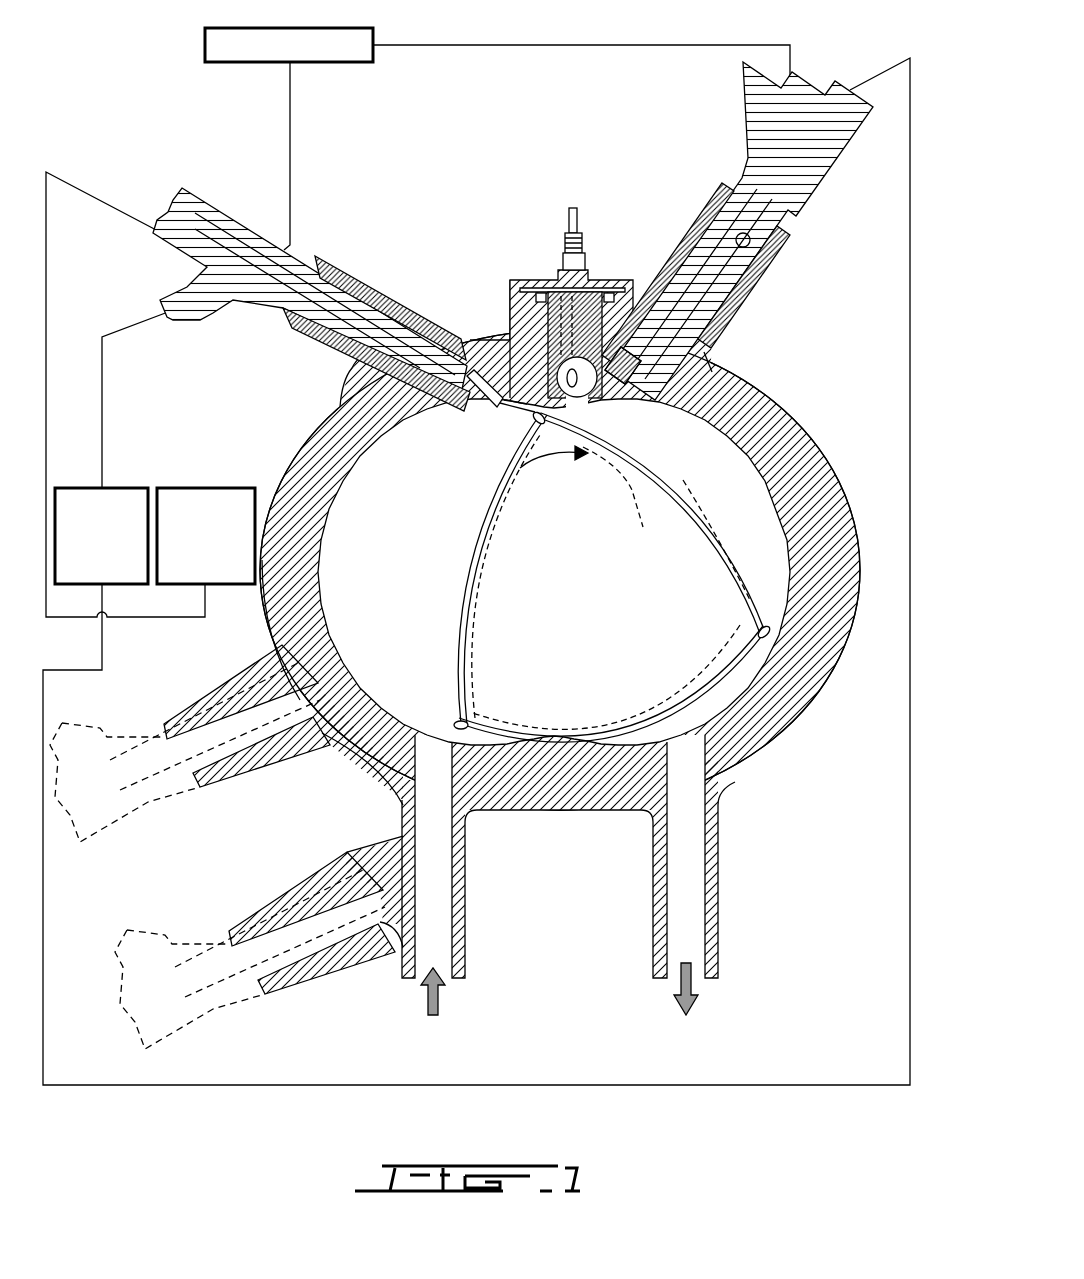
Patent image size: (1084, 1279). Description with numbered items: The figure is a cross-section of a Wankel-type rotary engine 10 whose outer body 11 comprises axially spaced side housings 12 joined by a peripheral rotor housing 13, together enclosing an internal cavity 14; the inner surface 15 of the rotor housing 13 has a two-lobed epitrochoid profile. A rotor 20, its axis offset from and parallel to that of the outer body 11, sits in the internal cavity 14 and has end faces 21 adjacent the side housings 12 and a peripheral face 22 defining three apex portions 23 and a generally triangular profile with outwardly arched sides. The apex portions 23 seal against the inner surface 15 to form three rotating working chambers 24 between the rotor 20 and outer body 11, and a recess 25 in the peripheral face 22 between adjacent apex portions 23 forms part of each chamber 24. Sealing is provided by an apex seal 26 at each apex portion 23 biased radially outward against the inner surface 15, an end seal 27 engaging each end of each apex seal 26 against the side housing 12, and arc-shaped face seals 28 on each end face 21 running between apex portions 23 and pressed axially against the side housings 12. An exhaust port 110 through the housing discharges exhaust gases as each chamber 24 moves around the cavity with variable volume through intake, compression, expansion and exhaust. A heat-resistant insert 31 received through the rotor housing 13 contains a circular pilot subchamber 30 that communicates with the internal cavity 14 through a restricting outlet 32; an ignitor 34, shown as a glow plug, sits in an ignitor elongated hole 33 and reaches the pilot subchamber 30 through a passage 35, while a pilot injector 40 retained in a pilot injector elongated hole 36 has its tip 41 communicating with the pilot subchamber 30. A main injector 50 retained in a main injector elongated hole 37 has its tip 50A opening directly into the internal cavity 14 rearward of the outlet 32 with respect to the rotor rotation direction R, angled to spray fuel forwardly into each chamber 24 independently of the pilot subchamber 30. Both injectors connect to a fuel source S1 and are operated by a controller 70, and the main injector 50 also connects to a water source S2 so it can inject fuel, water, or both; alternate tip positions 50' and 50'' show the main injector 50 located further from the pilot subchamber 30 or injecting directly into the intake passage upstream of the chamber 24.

The rotary engine 10 is at (913, 296).
The outer body 11 is at (765, 386).
The side housings 12 is at (722, 452).
The rotor housing 13 is at (808, 482).
The internal cavity 14 is at (696, 465).
The inner surface 15 is at (706, 360).
The rotor 20 is at (558, 470).
The end faces 21 is at (586, 470).
The peripheral face 22 is at (455, 576).
The apex portions 23 is at (532, 400).
The working chambers 24 is at (425, 451).
The recess 25 is at (632, 483).
The apex seal 26 is at (527, 402).
The end seal 27 is at (545, 430).
The face seal 28 is at (470, 592).
The pilot subchamber 30 is at (602, 294).
The insert 31 is at (601, 289).
The outlet 32 is at (588, 406).
The ignitor elongated hole 33 is at (543, 290).
The ignitor 34 is at (573, 208).
The passage 35 is at (524, 338).
The pilot injector elongated hole 36 is at (750, 240).
The main injector elongated hole 37 is at (352, 256).
The pilot injector 40 is at (860, 141).
The tip 41 is at (703, 333).
The main injector 50 is at (310, 243).
The tip 50A is at (490, 415).
The alternate tip position 50' is at (185, 755).
The alternate tip position 50'' is at (250, 960).
The controller 70 is at (205, 45).
The exhaust port 110 is at (740, 770).
The fuel source S1 is at (128, 488).
The water source S2 is at (205, 488).
The direction of rotor rotation R is at (554, 450).